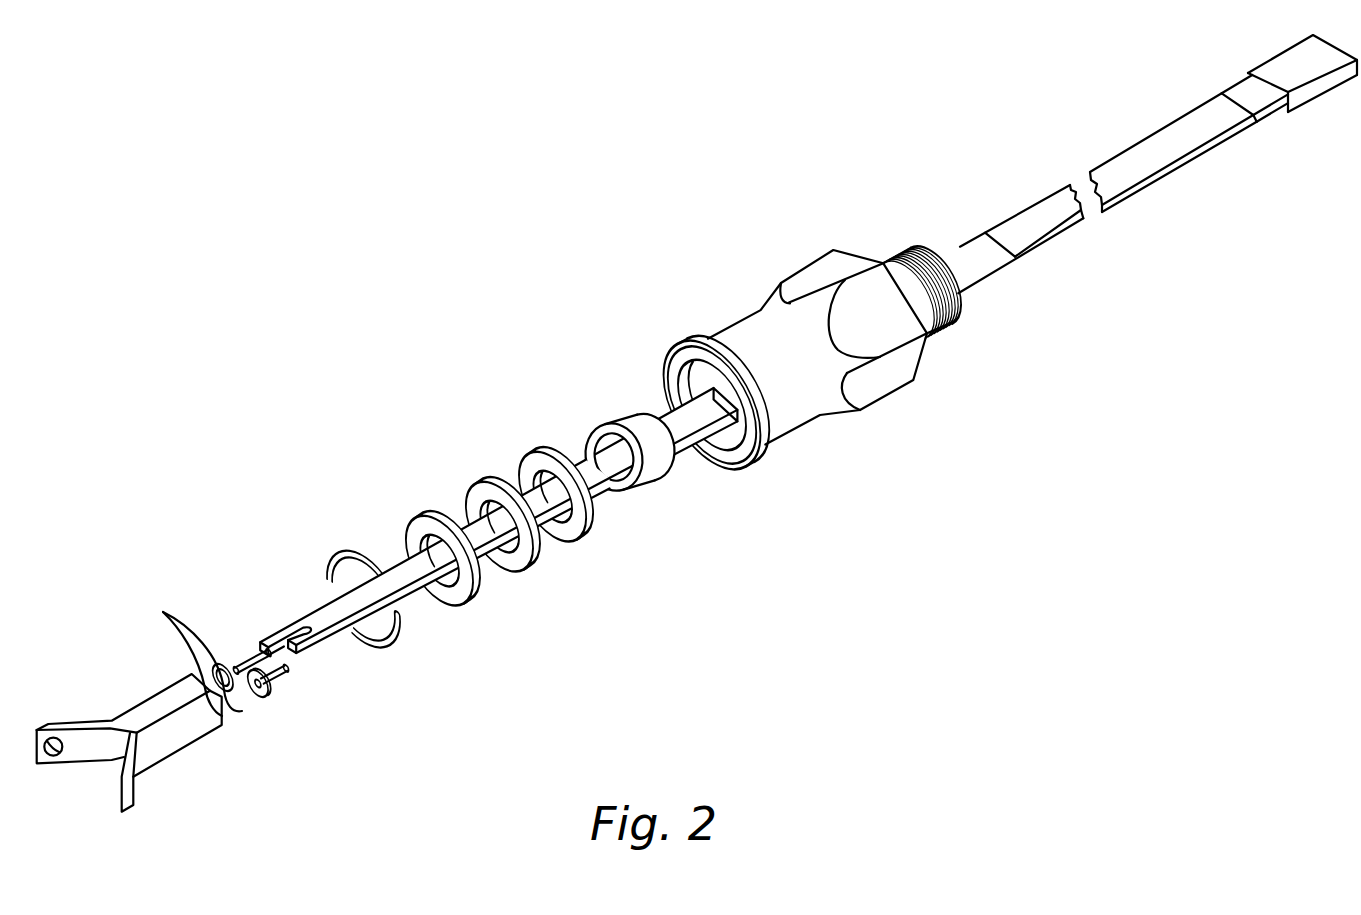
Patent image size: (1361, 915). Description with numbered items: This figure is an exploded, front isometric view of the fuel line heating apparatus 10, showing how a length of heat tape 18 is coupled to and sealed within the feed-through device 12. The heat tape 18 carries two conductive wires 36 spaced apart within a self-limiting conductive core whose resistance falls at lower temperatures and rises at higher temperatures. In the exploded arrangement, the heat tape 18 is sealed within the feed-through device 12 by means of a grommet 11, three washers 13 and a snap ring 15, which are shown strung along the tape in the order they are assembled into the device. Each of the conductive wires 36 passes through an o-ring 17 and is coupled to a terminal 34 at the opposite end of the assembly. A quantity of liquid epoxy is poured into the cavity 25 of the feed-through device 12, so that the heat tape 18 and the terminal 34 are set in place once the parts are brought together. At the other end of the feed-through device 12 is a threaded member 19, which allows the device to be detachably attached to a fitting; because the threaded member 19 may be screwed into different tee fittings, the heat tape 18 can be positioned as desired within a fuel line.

The fuel line heating apparatus 10 is at (876, 100).
The grommet 11 is at (650, 450).
The feed-through device 12 is at (888, 327).
The washers 13 is at (573, 525).
The snap ring 15 is at (378, 652).
The o-ring 17 is at (165, 613).
The heat tape 18 is at (1177, 143).
The threaded member 19 is at (955, 268).
The cavity 25 is at (725, 441).
The terminal 34 is at (162, 740).
The conductive wires 36 is at (237, 655).